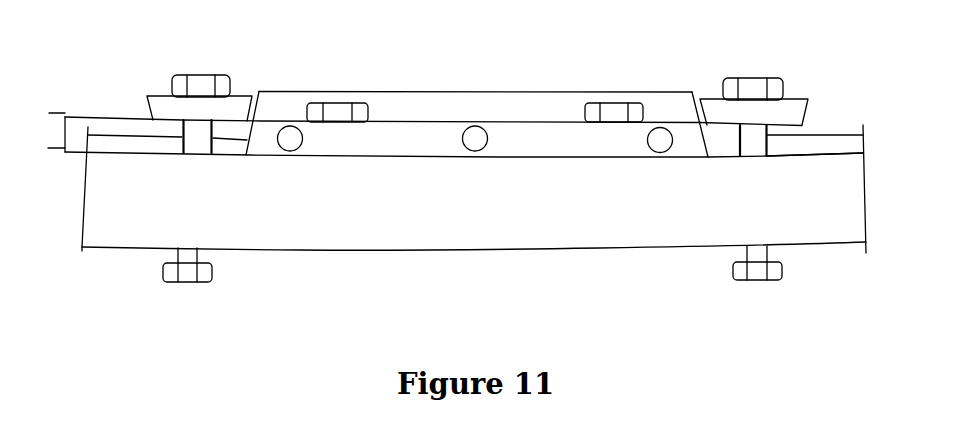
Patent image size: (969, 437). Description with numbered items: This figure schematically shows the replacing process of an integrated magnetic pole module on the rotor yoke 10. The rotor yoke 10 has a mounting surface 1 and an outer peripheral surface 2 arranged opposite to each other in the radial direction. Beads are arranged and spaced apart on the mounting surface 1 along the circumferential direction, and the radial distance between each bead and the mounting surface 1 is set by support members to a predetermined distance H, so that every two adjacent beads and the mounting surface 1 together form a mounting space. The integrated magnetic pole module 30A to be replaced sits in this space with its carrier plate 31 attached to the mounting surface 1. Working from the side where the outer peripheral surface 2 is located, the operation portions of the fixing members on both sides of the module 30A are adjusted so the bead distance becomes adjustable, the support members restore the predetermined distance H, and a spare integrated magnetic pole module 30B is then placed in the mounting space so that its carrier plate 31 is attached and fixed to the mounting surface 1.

The mounting surface 1 is at (813, 153).
The outer peripheral surface 2 is at (552, 253).
The rotor yoke 10 is at (474, 215).
The integrated magnetic pole module to be replaced 30A is at (477, 91).
The spare integrated magnetic pole module 30B is at (471, 84).
The carrier plate 31 is at (465, 141).
The predetermined distance H is at (50, 130).